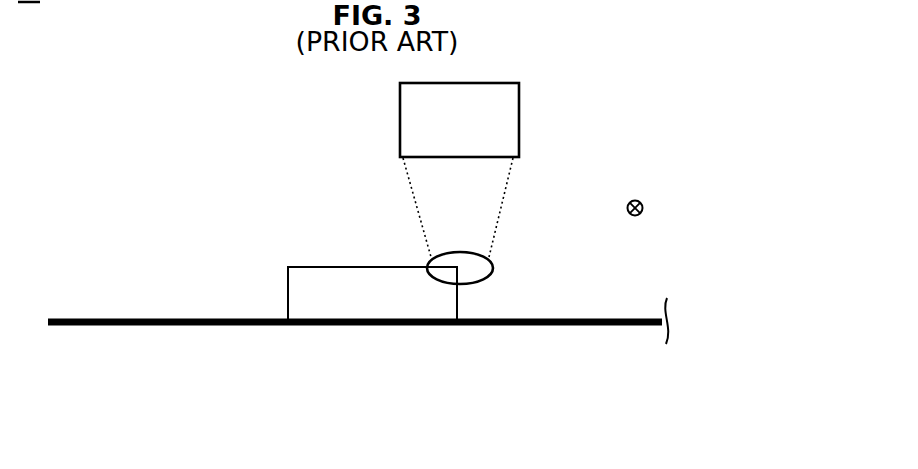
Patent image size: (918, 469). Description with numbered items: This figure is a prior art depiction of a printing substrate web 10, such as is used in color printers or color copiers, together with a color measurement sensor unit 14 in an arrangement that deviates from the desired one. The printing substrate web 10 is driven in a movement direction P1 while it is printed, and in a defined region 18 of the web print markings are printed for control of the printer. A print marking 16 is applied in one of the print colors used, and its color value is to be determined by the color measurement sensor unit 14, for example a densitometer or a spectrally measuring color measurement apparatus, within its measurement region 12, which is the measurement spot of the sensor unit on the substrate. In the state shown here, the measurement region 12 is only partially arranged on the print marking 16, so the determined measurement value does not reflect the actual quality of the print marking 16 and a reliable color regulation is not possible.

The printing substrate web 10 is at (262, 326).
The measurement region 12 is at (490, 268).
The color measurement sensor unit 14 is at (406, 99).
The print marking 16 is at (288, 277).
The defined region 18 is at (124, 371).
The movement direction P1 is at (642, 203).